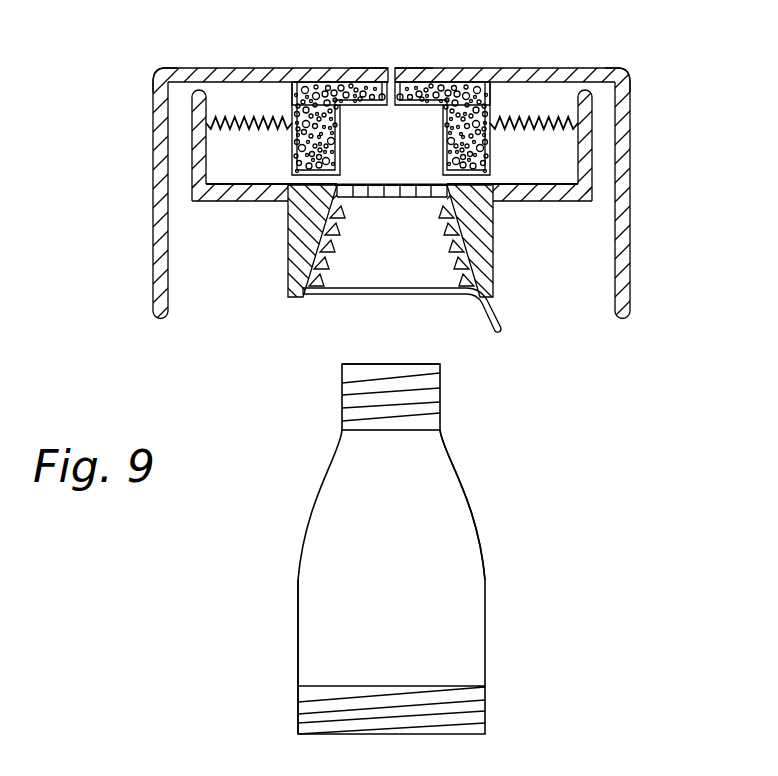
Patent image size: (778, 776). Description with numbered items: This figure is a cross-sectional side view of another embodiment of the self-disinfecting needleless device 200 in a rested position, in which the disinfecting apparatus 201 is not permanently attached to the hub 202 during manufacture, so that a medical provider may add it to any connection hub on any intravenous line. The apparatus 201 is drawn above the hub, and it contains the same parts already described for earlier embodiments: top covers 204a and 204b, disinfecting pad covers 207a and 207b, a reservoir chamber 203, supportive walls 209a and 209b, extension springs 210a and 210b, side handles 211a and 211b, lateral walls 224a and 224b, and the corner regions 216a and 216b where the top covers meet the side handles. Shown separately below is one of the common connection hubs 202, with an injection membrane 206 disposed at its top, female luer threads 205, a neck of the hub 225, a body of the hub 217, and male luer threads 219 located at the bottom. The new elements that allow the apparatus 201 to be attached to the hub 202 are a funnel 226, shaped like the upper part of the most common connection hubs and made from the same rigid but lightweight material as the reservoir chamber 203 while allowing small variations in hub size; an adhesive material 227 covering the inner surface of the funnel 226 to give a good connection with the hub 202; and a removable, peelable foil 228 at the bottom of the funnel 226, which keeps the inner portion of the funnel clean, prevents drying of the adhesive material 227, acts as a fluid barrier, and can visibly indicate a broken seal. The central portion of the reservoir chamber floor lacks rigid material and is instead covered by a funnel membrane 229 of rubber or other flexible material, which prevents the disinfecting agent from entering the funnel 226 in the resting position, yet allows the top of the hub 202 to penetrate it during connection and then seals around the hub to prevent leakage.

The self-disinfecting needleless device 200 is at (600, 381).
The disinfecting apparatus 201 is at (165, 69).
The hub 202 is at (486, 642).
The reservoir chamber 203 is at (532, 202).
The top cover 204a is at (370, 68).
The top cover 204b is at (415, 68).
The female luer threads 205 is at (357, 400).
The injection membrane 206 is at (362, 364).
The disinfecting pad cover 207a is at (330, 110).
The disinfecting pad cover 207b is at (460, 112).
The supportive wall 209a is at (292, 102).
The supportive wall 209b is at (492, 103).
The extension spring 210a is at (222, 200).
The extension spring 210b is at (565, 170).
The side handle 211a is at (153, 260).
The side handle 211b is at (632, 248).
The first corner bend of cap 216a is at (172, 80).
The second corner bend of cap 216b is at (595, 100).
The body of the hub 217 is at (297, 627).
The male luer threads 219 is at (443, 735).
The lateral wall 224a is at (195, 130).
The lateral wall 224b is at (582, 126).
The neck of the hub 225 is at (435, 503).
The funnel 226 is at (288, 250).
The adhesive material 227 is at (340, 250).
The removable foil 228 is at (418, 296).
The funnel membrane 229 is at (382, 198).